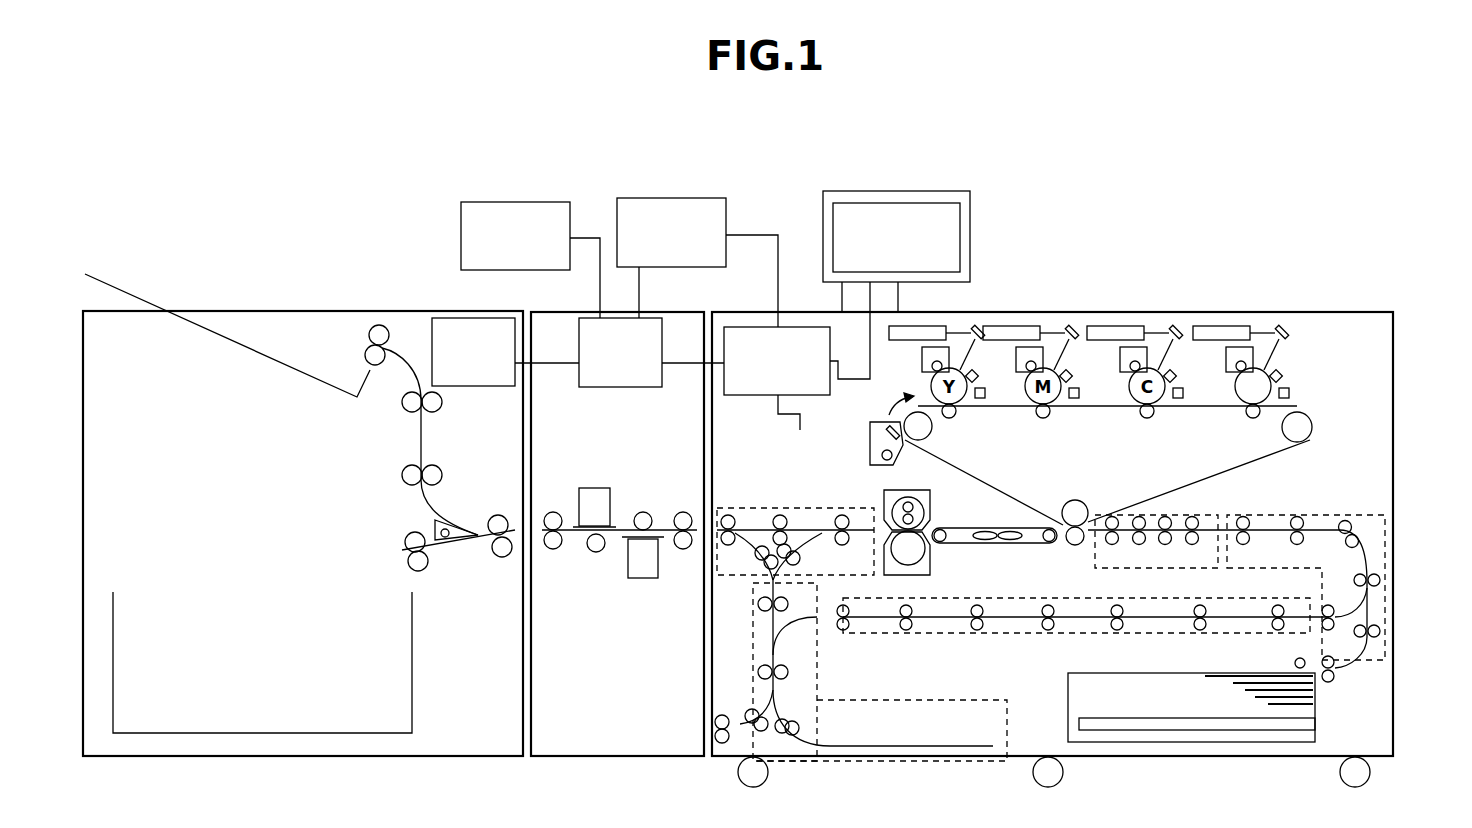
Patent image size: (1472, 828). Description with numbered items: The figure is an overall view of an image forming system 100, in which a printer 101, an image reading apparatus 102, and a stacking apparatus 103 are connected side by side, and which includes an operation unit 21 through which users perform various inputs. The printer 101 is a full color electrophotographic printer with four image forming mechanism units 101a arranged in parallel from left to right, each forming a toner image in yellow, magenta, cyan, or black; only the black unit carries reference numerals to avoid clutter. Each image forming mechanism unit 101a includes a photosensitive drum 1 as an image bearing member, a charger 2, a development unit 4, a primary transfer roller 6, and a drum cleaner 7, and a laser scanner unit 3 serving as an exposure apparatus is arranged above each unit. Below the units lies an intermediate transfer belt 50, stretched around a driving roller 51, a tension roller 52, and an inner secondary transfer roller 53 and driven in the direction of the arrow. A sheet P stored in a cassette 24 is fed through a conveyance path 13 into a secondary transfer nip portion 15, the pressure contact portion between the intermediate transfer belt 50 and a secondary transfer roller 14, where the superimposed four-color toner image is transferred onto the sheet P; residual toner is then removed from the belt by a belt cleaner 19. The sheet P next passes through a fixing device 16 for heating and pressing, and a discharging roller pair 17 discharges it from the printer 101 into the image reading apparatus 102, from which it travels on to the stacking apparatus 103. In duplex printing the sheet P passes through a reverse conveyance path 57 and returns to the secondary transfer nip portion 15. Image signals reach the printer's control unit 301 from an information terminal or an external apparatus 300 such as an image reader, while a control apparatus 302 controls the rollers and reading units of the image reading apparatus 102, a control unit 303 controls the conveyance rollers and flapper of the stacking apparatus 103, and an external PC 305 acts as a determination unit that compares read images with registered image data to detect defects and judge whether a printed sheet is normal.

The image forming system 100 is at (928, 160).
The printer 101 is at (1048, 312).
The image forming mechanism unit 101a is at (1193, 314).
The image reading apparatus 102 is at (600, 720).
The stacking apparatus 103 is at (466, 720).
The photosensitive drum 1 is at (1263, 368).
The charger 2 is at (1288, 367).
The laser scanner unit 3 is at (1208, 330).
The development unit 4 is at (1238, 353).
The primary transfer roller 6 is at (1294, 394).
The drum cleaner 7 is at (1290, 394).
The conveyance path 13 is at (1372, 653).
The secondary transfer roller 14 is at (1070, 547).
The secondary transfer nip portion 15 is at (1057, 547).
The fixing device 16 is at (912, 550).
The discharging roller pair 17 is at (748, 572).
The belt cleaner 19 is at (870, 453).
The operation unit 21 is at (888, 213).
The cassette 24 is at (1227, 743).
The sheet P is at (1290, 706).
The intermediate transfer belt 50 is at (1176, 460).
The driving roller 51 is at (933, 430).
The tension roller 52 is at (1303, 425).
The inner secondary transfer roller 53 is at (1089, 512).
The reverse conveyance path 57 is at (877, 630).
The external apparatus 300 is at (670, 198).
The control unit 301 is at (754, 397).
The control apparatus 302 is at (622, 389).
The control unit 303 is at (475, 388).
The external PC 305 is at (518, 202).